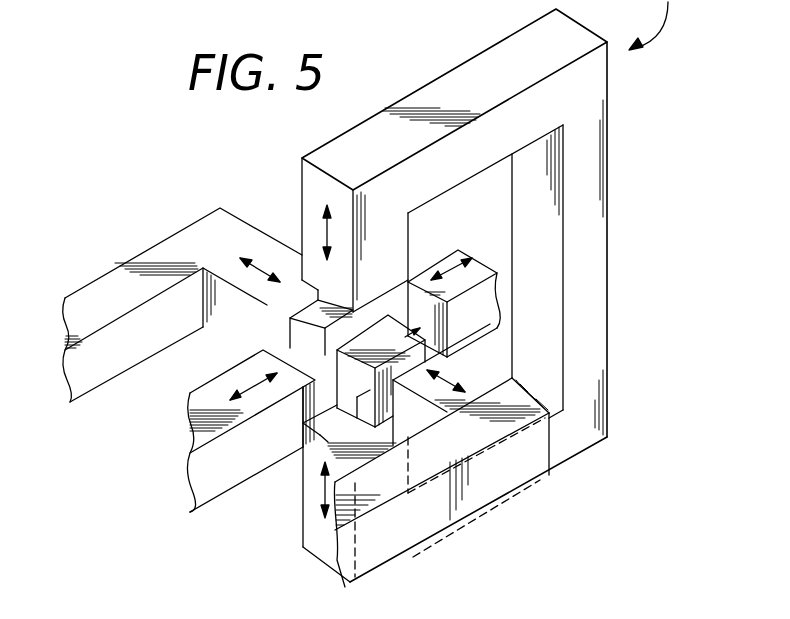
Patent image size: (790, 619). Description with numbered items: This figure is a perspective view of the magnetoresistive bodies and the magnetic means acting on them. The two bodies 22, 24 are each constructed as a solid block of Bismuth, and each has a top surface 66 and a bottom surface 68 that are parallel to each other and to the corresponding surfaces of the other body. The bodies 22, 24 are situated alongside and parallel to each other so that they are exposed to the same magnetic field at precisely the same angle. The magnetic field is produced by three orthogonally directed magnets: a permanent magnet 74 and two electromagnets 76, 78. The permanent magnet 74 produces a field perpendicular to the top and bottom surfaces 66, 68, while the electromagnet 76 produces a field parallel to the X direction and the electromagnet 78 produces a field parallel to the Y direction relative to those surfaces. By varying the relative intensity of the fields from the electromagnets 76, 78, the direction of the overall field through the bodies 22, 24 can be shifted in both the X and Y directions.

The magnetoresistive body 22 is at (318, 293).
The magnetoresistive body 24 is at (414, 330).
The top surface 66 is at (335, 333).
The bottom surface 68 is at (332, 400).
The permanent magnet 74 is at (503, 47).
The electromagnet 76 is at (108, 282).
The electromagnet 78 is at (447, 247).